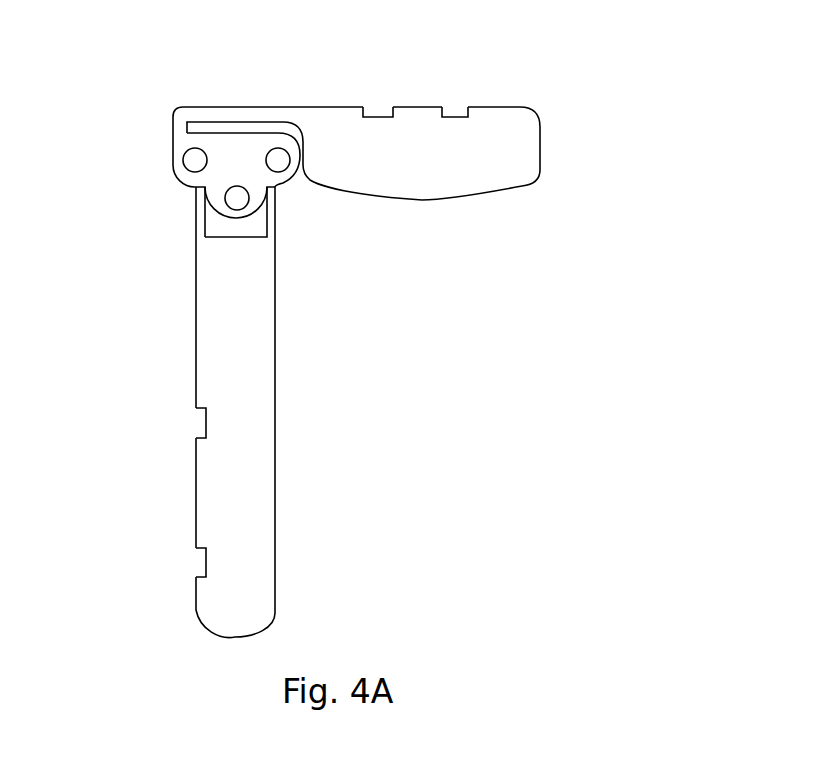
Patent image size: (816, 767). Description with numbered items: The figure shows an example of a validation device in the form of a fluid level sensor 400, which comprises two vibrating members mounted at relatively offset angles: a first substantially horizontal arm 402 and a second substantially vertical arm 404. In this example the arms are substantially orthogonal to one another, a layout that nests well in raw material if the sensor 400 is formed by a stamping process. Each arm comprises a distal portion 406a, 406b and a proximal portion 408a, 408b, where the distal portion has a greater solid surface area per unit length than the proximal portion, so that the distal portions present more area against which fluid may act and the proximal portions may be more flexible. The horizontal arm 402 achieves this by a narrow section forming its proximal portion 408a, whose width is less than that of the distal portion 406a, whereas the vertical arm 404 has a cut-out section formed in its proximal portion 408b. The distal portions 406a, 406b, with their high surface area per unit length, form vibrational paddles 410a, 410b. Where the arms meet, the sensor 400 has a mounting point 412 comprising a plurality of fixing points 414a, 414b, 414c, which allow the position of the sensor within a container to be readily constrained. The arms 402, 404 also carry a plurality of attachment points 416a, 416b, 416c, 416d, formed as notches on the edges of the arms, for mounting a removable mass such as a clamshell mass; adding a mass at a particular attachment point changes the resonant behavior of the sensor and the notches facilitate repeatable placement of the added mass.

The fluid level sensor 400 is at (129, 65).
The first substantially horizontal arm 402 is at (505, 221).
The second substantially vertical arm 404 is at (316, 611).
The distal portion 406a is at (500, 160).
The distal portion 406b is at (215, 492).
The proximal portion 408a is at (212, 117).
The proximal portion 408b is at (270, 227).
The vibrational paddle 410a is at (438, 182).
The vibrational paddle 410b is at (222, 602).
The mounting point 412 is at (193, 190).
The fixing point 414a is at (193, 158).
The fixing point 414b is at (273, 158).
The fixing point 414c is at (233, 207).
The attachment point 416a is at (195, 560).
The attachment point 416b is at (195, 420).
The attachment point 416c is at (383, 110).
The attachment point 416d is at (457, 110).